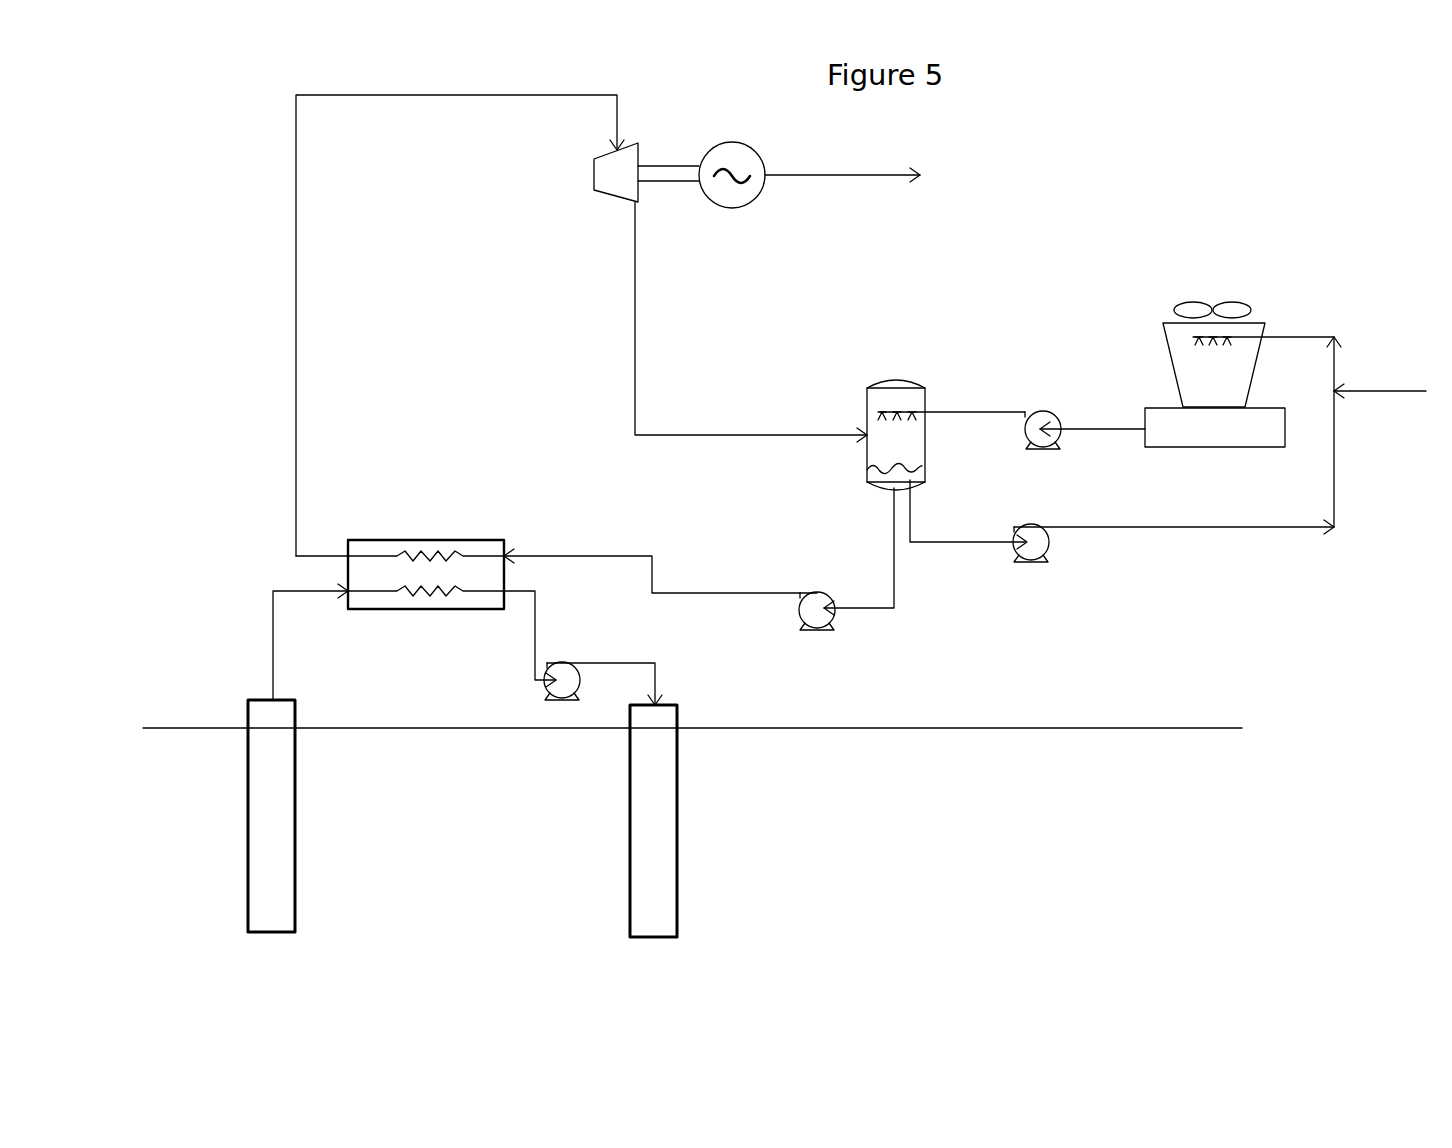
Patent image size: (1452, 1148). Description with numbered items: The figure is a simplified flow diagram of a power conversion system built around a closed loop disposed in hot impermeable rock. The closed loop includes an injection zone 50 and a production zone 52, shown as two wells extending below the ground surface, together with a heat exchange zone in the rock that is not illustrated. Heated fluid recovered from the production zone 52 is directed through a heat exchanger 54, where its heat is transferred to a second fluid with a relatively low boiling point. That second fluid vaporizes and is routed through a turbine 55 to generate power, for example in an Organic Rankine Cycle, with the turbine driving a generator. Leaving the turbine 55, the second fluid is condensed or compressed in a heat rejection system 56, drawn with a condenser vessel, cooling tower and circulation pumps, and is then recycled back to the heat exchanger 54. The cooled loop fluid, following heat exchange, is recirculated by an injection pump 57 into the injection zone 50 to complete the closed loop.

The injection zone 50 is at (677, 921).
The production zone 52 is at (295, 921).
The heat exchanger 54 is at (367, 609).
The turbine 55 is at (757, 175).
The heat rejection system 56 is at (1056, 316).
The injection pump 57 is at (569, 660).